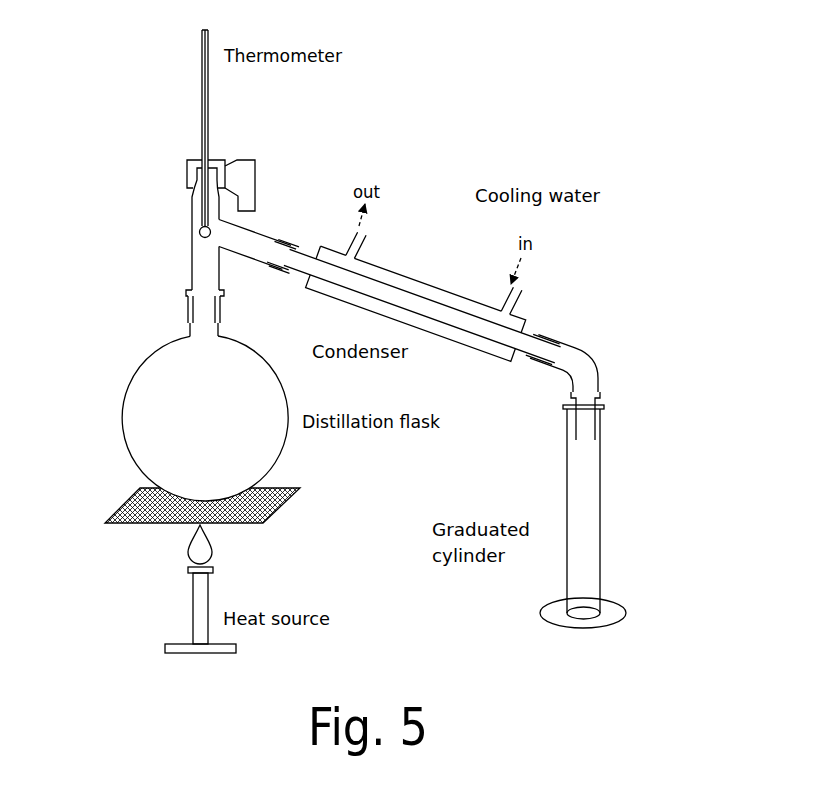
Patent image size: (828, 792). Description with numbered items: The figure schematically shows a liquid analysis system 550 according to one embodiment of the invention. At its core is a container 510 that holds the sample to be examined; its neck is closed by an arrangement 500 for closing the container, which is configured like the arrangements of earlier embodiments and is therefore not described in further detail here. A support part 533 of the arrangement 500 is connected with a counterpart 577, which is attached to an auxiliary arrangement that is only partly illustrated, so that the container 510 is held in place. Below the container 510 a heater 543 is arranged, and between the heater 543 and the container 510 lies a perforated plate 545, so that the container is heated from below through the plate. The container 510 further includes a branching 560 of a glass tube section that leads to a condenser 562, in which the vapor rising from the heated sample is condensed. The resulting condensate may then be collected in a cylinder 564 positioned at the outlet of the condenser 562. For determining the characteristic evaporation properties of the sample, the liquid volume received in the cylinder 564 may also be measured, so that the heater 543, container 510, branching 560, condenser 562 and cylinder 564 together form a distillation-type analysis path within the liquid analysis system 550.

The arrangement for closing a container 500 is at (176, 196).
The container 510 is at (130, 382).
The support part 533 is at (234, 155).
The heater 543 is at (193, 597).
The perforated plate 545 is at (112, 518).
The liquid analysis system 550 is at (146, 145).
The branching 560 is at (233, 252).
The condenser 562 is at (445, 215).
The cylinder 564 is at (621, 504).
The counterpart 577 is at (210, 207).